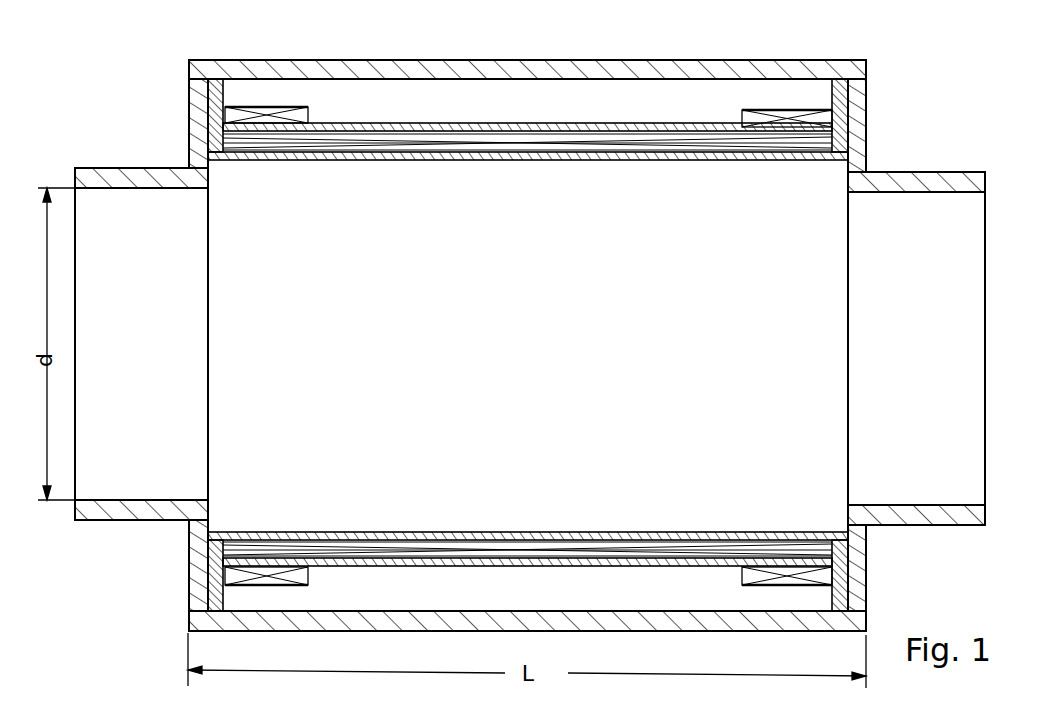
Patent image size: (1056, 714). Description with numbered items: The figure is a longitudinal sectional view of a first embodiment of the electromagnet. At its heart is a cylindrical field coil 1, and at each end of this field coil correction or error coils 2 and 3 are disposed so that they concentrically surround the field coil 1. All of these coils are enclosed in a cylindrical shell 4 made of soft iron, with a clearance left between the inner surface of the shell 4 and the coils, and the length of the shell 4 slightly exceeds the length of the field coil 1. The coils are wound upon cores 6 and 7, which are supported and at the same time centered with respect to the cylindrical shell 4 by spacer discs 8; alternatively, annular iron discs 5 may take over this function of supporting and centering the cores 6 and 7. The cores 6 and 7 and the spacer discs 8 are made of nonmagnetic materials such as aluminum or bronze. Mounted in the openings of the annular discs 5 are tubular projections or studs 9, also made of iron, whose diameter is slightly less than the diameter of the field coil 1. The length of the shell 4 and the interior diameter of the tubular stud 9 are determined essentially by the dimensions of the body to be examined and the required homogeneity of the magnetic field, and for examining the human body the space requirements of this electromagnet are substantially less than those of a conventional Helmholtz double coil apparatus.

The cylindrical field coil 1 is at (514, 140).
The correction coil 2 is at (292, 108).
The correction coil 3 is at (753, 109).
The cylindrical shell 4 is at (660, 68).
The annular iron disc 5 is at (198, 131).
The core 6 is at (563, 160).
The core 7 is at (716, 128).
The spacer disc 8 is at (214, 93).
The tubular stud 9 is at (113, 510).